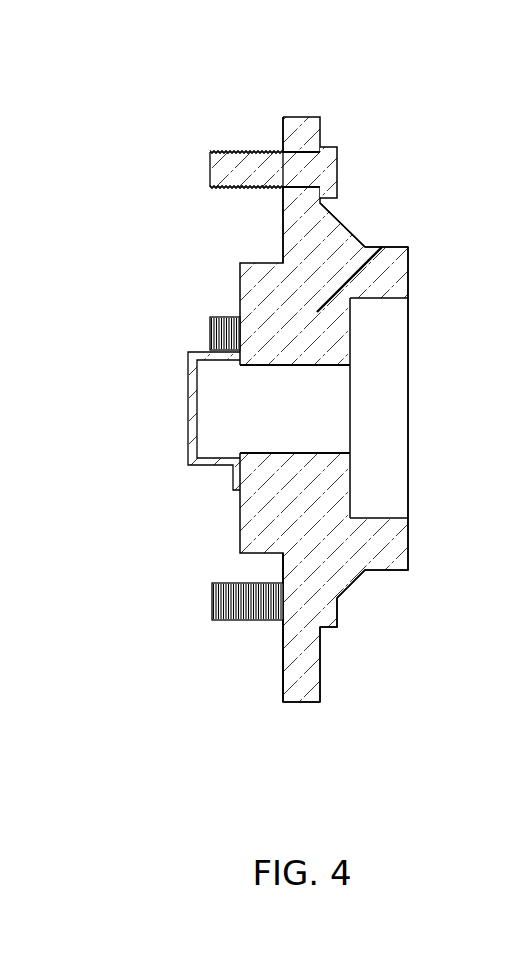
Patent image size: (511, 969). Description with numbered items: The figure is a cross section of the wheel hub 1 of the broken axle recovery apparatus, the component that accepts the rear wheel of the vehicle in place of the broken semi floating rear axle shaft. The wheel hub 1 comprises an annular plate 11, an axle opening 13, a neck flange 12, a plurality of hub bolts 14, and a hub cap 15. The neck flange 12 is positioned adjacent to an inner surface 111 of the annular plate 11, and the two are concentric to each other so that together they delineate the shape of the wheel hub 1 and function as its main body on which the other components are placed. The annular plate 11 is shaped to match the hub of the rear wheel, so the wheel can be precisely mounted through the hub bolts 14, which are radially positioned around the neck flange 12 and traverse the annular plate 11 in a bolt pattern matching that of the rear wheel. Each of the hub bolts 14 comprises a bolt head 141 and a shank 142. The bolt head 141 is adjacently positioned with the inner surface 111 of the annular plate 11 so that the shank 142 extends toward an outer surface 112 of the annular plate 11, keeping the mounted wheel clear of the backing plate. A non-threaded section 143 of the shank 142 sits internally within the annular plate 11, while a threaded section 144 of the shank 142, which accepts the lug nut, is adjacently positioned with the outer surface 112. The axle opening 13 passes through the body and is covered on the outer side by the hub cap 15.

The wheel hub 1 is at (132, 508).
The annular plate 11 is at (318, 650).
The inner surface 111 is at (320, 693).
The outer surface 112 is at (283, 697).
The neck flange 12 is at (402, 549).
The axle opening 13 is at (272, 382).
The hub bolts 14 is at (304, 344).
The bolt head 141 is at (330, 163).
The shank 142 is at (310, 63).
The non-threaded section 143 is at (308, 158).
The threaded section 144 is at (243, 158).
The hub cap 15 is at (188, 423).